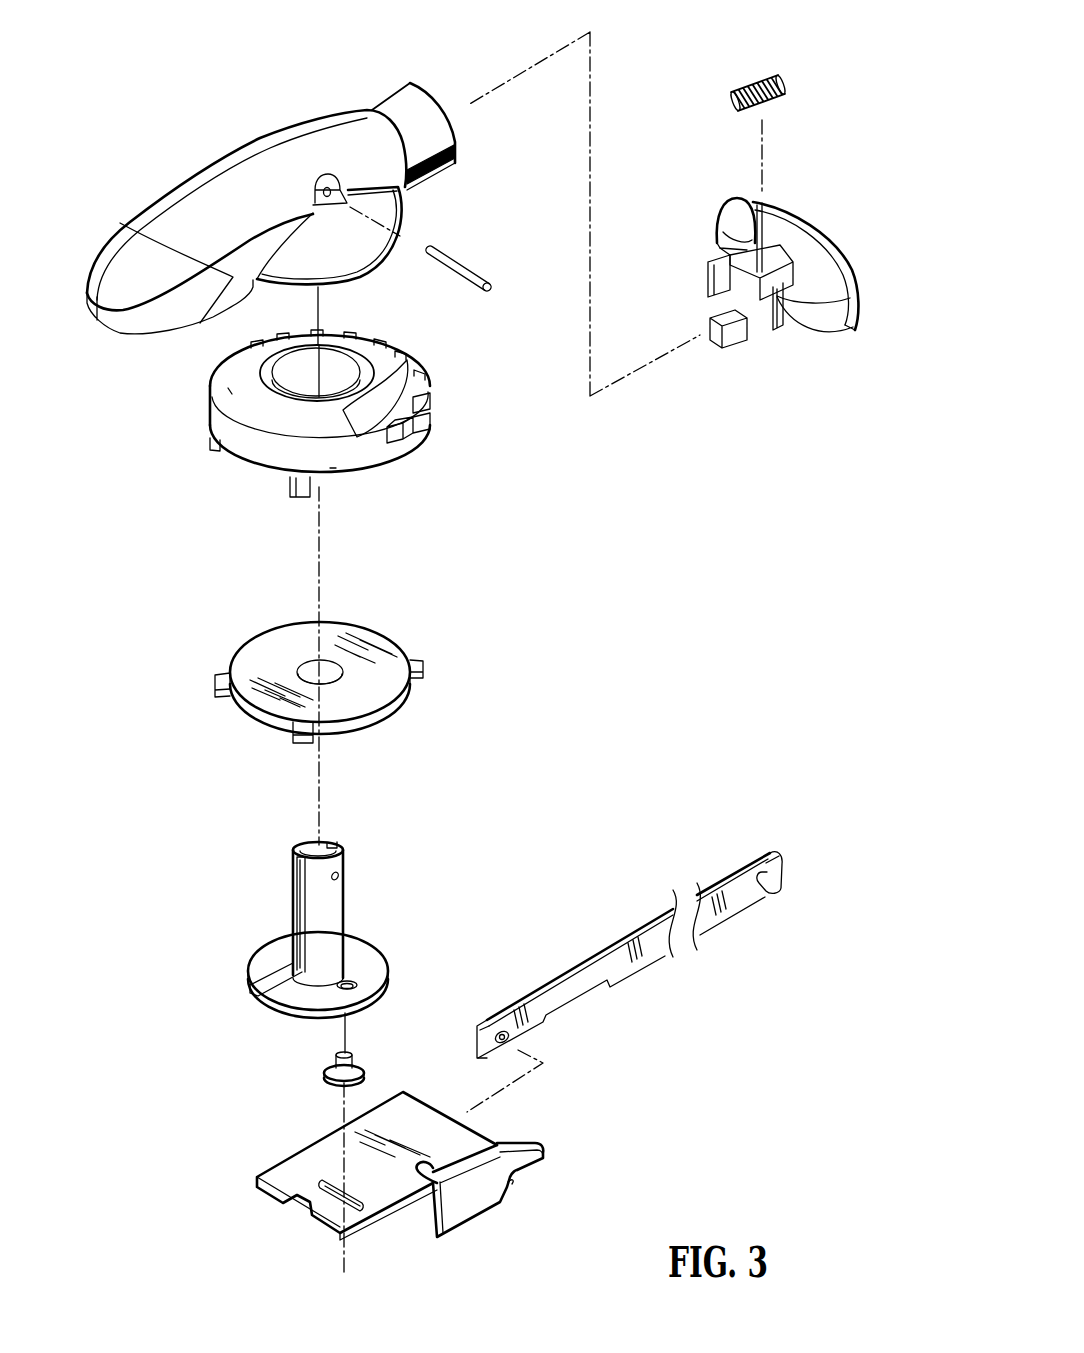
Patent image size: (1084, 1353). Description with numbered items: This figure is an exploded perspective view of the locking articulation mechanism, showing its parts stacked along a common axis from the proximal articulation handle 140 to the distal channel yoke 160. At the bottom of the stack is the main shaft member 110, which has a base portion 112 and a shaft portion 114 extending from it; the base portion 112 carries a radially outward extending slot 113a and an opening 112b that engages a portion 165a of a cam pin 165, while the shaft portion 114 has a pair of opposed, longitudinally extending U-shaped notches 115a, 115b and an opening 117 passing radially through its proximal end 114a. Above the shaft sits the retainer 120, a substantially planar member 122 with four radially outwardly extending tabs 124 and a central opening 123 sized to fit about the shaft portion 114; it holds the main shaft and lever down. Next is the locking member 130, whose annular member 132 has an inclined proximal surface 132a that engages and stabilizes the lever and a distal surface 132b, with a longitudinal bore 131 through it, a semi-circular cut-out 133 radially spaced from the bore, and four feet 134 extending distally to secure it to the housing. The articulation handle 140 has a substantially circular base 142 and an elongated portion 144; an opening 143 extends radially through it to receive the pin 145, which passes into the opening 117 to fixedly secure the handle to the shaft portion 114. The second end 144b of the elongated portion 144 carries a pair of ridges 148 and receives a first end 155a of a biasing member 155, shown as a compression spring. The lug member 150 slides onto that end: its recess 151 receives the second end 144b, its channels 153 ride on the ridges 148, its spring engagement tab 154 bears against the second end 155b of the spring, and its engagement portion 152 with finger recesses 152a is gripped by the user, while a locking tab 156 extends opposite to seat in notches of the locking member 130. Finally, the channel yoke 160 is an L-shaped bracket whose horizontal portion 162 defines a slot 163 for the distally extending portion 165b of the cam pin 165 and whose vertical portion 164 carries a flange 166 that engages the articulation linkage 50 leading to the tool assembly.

The articulation linkage 50 is at (637, 905).
The main shaft member 110 is at (412, 900).
The base portion 112 is at (319, 982).
The opening 112b is at (370, 975).
The slot 113a is at (275, 998).
The shaft portion 114 is at (310, 884).
The proximal end 114a is at (297, 845).
The notch 115a is at (292, 883).
The notch 115b is at (333, 845).
The opening 117 is at (325, 876).
The retainer 120 is at (455, 645).
The planar member 122 is at (393, 708).
The opening 123 is at (336, 662).
The tabs 124 is at (214, 688).
The locking member 130 is at (455, 428).
The longitudinal bore 131 is at (335, 363).
The annular member 132 is at (286, 436).
The proximal surface 132a is at (228, 392).
The distal surface 132b is at (365, 480).
The semi-circular cut-out 133 is at (392, 395).
The feet 134 is at (212, 447).
The articulation handle 140 is at (206, 122).
The circular base 142 is at (388, 214).
The opening 143 is at (192, 174).
The elongated portion 144 is at (290, 148).
The second end 144b is at (410, 110).
The pin 145 is at (452, 250).
The ridges 148 is at (437, 165).
The lug member 150 is at (822, 217).
The recess 151 is at (778, 262).
The engagement portion 152 is at (797, 275).
The recesses 152a is at (733, 225).
The channels 153 is at (710, 290).
The spring engagement tab 154 is at (780, 225).
The biasing member 155 is at (750, 77).
The first end 155a is at (782, 77).
The second end 155b is at (738, 106).
The locking tab 156 is at (725, 345).
The channel yoke 160 is at (566, 1122).
The horizontal portion 162 is at (354, 1177).
The slot 163 is at (314, 1213).
The vertical portion 164 is at (470, 1205).
The cam pin 165 is at (370, 1053).
The portion 165a is at (328, 1062).
The distally extending portion 165b is at (338, 1084).
The flange 166 is at (522, 1160).